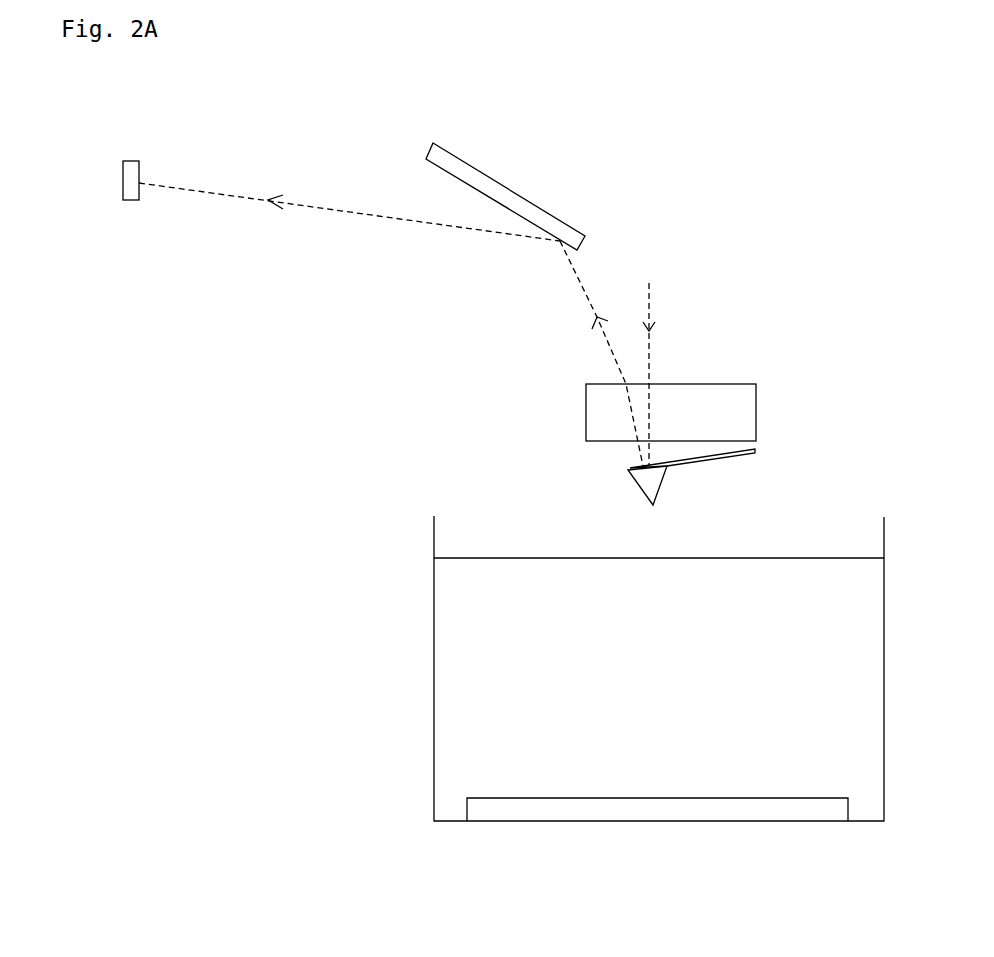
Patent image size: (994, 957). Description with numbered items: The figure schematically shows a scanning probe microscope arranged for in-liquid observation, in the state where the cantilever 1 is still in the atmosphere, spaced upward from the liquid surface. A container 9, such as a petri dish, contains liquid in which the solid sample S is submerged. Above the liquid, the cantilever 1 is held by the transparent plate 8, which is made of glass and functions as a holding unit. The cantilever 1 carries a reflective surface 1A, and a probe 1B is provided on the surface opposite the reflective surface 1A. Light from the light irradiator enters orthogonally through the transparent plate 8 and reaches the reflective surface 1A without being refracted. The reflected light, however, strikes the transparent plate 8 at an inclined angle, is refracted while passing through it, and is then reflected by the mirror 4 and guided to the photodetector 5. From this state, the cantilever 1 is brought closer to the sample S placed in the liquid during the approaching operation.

The cantilever 1 is at (649, 495).
The reflective surface 1A is at (640, 467).
The probe 1B is at (642, 494).
The mirror 4 is at (493, 178).
The photodetector 5 is at (131, 200).
The transparent plate 8 is at (732, 384).
The container 9 is at (434, 656).
The sample S is at (656, 813).